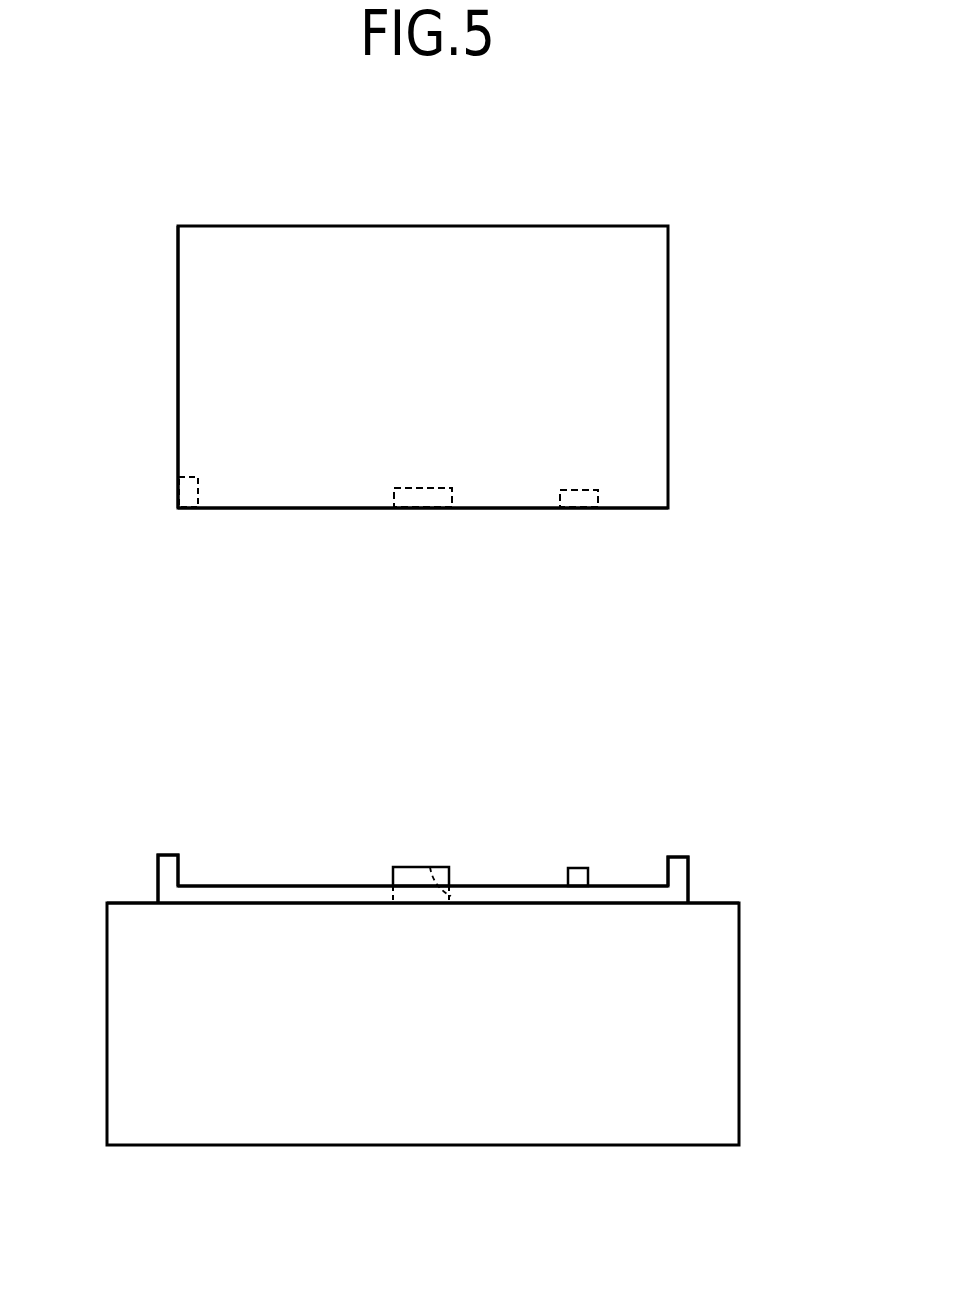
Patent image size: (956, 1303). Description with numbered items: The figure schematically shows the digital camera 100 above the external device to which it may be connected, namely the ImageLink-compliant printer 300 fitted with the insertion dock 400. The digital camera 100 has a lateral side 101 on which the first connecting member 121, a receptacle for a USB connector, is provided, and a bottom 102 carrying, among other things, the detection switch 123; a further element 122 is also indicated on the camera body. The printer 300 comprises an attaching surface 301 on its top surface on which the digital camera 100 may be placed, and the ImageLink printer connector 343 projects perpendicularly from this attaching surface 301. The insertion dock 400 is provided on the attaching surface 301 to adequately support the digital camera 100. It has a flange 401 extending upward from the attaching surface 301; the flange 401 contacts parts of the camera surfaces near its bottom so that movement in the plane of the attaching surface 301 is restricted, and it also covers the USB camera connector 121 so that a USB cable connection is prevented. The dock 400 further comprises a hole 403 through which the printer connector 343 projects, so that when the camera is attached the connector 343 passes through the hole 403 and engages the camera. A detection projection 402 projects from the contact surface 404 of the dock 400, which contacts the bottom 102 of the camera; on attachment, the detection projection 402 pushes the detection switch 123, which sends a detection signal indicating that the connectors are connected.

The digital camera 100 is at (697, 293).
The lateral side 101 is at (178, 410).
The bottom 102 is at (232, 508).
The first connecting member 121 is at (178, 490).
The camera connector 122 is at (423, 508).
The detection switch 123 is at (577, 508).
The ImageLink-compliant printer 300 is at (770, 1028).
The attaching surface 301 is at (130, 903).
The insertion dock 400 is at (712, 877).
The flange 401 is at (168, 867).
The detection projection 402 is at (577, 877).
The hole 403 is at (431, 866).
The contact surface 404 is at (280, 886).
The ImageLink printer connector 343 is at (422, 878).